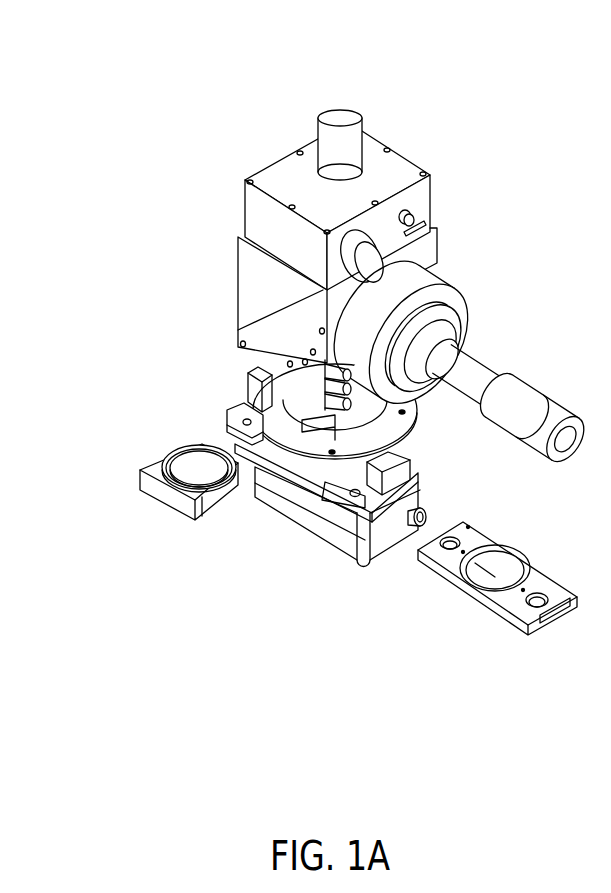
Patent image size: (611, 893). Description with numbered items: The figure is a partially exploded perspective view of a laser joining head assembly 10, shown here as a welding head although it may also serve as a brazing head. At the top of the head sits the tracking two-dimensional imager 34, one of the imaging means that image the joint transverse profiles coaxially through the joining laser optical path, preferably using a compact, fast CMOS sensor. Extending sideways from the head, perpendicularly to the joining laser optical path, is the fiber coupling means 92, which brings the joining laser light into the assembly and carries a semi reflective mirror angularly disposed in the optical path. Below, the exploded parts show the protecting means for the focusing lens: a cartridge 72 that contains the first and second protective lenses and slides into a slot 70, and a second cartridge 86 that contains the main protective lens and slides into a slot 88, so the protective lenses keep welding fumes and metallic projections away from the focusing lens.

The laser joining head assembly 10 is at (428, 83).
The tracking 2D imager 34 is at (258, 222).
The fiber coupling means 92 is at (531, 390).
The slot 88 is at (278, 410).
The slot 70 is at (426, 489).
The second cartridge 86 is at (178, 515).
The cartridge 72 is at (478, 600).